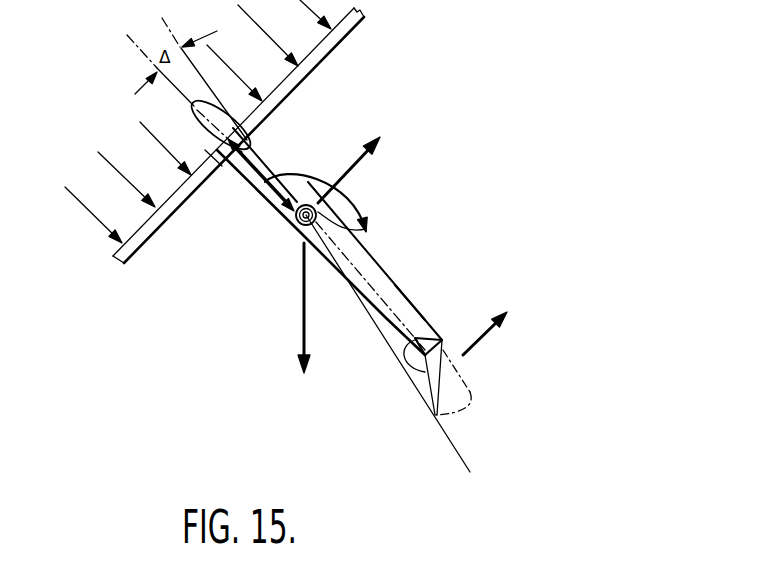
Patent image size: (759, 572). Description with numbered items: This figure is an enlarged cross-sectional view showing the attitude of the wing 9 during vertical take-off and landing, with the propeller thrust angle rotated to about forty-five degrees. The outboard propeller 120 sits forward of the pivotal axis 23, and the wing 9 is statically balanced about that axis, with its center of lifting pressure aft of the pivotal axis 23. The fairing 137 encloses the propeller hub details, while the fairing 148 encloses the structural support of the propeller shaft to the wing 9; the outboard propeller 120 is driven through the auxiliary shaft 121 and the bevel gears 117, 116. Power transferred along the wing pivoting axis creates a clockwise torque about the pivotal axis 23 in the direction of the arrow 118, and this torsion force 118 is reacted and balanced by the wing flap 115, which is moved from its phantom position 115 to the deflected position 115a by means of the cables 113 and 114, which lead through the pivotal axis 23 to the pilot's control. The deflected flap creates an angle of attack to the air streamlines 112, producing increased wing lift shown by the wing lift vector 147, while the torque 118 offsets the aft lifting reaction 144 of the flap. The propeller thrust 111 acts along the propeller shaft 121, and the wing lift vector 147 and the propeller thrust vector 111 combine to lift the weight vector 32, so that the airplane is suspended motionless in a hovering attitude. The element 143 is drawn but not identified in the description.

The wing 9 is at (383, 273).
The pivotal axis 23 is at (298, 234).
The weight vector 32 is at (302, 289).
The propeller thrust 111 is at (212, 160).
The air streamlines 112 is at (95, 213).
The cable 113 is at (402, 300).
The cable 114 is at (392, 343).
The wing flap 115 is at (463, 380).
The wing flap deflected position 115a is at (432, 412).
The bevel gear 116 is at (307, 203).
The bevel gear 117 is at (367, 232).
The torque arrow 118 is at (357, 190).
The outboard propeller 120 is at (335, 54).
The auxiliary shaft 121 is at (278, 168).
The fairing 137 is at (190, 107).
The tail flap 143 is at (448, 343).
The aft lifting reaction 144 is at (488, 340).
The wing lift vector 147 is at (344, 172).
The fairing 148 is at (270, 200).